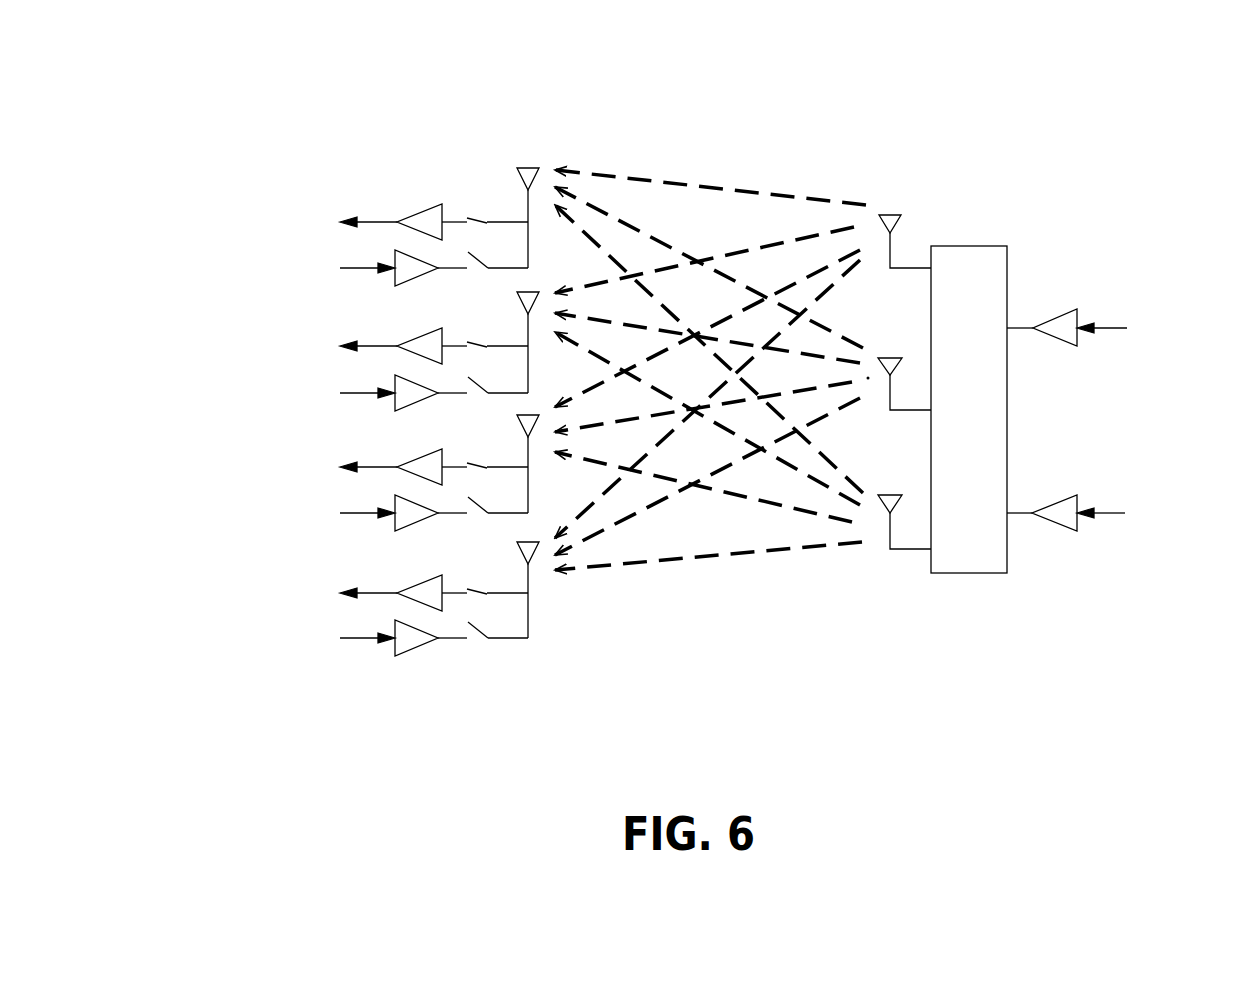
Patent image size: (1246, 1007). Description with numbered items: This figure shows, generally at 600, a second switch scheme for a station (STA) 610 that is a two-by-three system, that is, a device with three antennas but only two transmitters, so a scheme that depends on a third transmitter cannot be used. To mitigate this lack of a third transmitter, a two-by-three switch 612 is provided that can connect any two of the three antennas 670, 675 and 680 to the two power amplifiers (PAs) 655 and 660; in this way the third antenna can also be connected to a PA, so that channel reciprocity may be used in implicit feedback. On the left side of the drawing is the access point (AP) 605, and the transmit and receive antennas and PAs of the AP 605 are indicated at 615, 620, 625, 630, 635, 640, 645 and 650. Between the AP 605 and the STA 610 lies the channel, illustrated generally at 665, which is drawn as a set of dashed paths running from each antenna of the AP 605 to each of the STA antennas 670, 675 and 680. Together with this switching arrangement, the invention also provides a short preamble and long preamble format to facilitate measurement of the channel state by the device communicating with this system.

The second switch scheme 600 is at (693, 342).
The AP 605 is at (347, 381).
The station (STA) 610 is at (1055, 373).
The 2×3 switch 612 is at (1070, 415).
The transmit and receive antennas and PAs of AP 615 is at (361, 201).
The transmit and receive antennas and PAs of AP 620 is at (341, 254).
The transmit and receive antennas and PAs of AP 625 is at (361, 346).
The transmit and receive antennas and PAs of AP 630 is at (360, 406).
The transmit and receive antennas and PAs of AP 635 is at (359, 468).
The transmit and receive antennas and PAs of AP 640 is at (351, 513).
The transmit and receive antennas and PAs of AP 645 is at (351, 597).
The transmit and receive antennas and PAs of AP 650 is at (351, 640).
The power amplifier (PA) 655 is at (1119, 309).
The power amplifier (PA) 660 is at (1119, 483).
The channel 665 is at (740, 365).
The antenna 670 is at (1014, 241).
The antenna 675 is at (1014, 384).
The antenna 680 is at (994, 560).